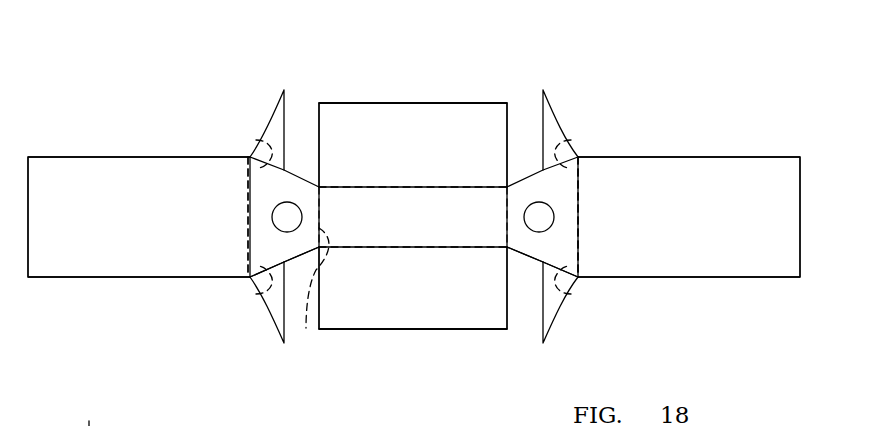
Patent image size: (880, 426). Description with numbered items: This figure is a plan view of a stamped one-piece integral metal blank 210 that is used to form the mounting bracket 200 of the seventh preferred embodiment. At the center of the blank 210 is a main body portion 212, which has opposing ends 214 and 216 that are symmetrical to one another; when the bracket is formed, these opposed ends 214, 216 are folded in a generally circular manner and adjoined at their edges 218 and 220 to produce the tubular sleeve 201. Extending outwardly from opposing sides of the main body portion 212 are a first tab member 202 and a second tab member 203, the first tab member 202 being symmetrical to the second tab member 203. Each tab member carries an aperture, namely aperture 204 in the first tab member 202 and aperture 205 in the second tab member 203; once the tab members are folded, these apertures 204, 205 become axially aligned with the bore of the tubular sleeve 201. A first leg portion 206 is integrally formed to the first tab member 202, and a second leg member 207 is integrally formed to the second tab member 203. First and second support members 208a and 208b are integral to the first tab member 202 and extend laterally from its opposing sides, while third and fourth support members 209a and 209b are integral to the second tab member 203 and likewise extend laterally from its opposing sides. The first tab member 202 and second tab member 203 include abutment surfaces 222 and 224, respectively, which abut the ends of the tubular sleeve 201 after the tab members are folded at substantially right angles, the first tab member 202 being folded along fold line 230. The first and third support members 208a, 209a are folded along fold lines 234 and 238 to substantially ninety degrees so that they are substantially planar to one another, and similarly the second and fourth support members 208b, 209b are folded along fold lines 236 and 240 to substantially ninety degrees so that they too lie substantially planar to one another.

The mounting bracket 200 is at (414, 291).
The tubular sleeve 201 is at (93, 412).
The first tab member 202 is at (258, 176).
The second tab member 203 is at (560, 185).
The aperture 204 is at (283, 217).
The aperture 205 is at (545, 217).
The first leg portion 206 is at (103, 183).
The second leg member 207 is at (706, 195).
The first support member 208a is at (273, 142).
The second support member 208b is at (275, 315).
The third support member 209a is at (553, 130).
The fourth support member 209b is at (555, 305).
The blank 210 is at (702, 72).
The main body portion 212 is at (388, 215).
The opposing end 214 is at (360, 122).
The opposing end 216 is at (412, 316).
The edge 218 is at (458, 103).
The edge 220 is at (465, 330).
The abutment surface 222 is at (258, 256).
The abutment surface 224 is at (560, 262).
The fold line 230 is at (311, 293).
The fold line 234 is at (256, 140).
The fold line 236 is at (256, 294).
The fold line 238 is at (571, 140).
The fold line 240 is at (571, 294).